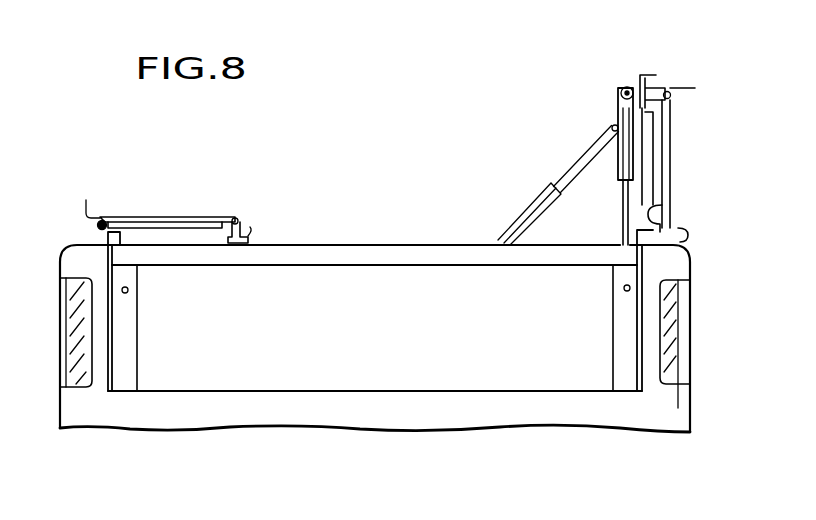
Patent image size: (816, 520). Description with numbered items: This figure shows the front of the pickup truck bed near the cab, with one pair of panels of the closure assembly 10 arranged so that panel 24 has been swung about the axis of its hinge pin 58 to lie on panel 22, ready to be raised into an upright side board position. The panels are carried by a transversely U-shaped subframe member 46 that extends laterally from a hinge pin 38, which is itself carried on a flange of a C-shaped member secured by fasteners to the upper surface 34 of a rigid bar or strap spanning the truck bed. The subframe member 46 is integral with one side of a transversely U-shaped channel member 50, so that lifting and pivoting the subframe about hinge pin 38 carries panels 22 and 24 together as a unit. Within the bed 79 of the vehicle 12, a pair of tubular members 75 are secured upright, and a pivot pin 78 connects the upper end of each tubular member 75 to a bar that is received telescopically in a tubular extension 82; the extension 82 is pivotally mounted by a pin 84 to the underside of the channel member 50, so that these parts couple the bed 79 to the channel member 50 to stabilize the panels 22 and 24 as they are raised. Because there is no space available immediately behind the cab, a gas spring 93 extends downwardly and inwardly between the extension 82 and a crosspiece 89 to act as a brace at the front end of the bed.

The closure assembly 10 is at (460, 190).
The container body 12 is at (697, 280).
The panel 22 is at (168, 217).
The panel 24 is at (208, 222).
The upper surface 34 is at (90, 244).
The hinge pin 38 is at (103, 222).
The subframe member 46 is at (207, 238).
The channel member 50 is at (252, 238).
The hinge pin 58 is at (240, 222).
The tubular member 75 is at (122, 338).
The pivot pin 78 is at (128, 291).
The bed 79 is at (480, 393).
The tubular extension 82 is at (617, 112).
The pin 84 is at (615, 84).
The crosspiece 89 is at (430, 264).
The gas spring 93 is at (533, 203).